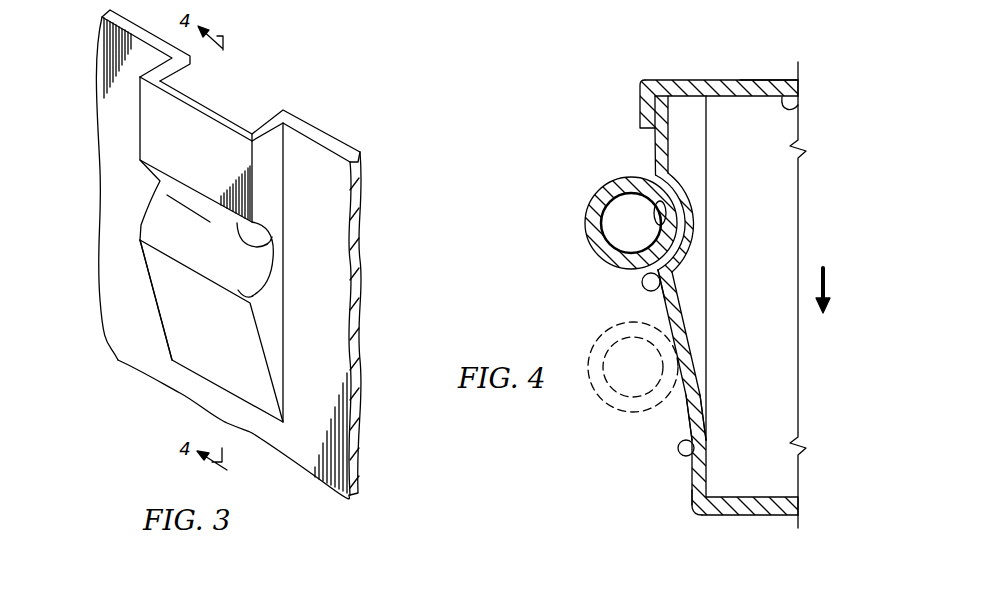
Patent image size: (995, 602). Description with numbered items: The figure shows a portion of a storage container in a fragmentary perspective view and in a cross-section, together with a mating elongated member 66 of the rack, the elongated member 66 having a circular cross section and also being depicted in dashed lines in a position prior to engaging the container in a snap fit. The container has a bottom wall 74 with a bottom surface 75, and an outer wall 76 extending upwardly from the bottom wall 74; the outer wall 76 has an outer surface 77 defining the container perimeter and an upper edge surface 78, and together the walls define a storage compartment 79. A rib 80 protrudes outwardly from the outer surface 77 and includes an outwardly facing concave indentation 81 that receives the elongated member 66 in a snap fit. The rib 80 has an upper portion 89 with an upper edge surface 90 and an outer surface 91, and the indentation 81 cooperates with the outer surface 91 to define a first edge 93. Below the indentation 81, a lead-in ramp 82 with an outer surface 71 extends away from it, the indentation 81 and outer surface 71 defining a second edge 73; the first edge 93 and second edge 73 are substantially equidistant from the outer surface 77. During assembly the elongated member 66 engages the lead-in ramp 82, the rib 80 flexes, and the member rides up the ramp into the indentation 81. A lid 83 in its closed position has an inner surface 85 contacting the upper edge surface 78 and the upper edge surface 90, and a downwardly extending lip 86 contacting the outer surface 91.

In FIG. 4, the elongated member 66 is at (590, 225).
In FIG. 3, the outer surface of lead-in ramp 71 is at (197, 341).
In FIG. 4, the outer surface of lead-in ramp 71 is at (683, 398).
In FIG. 3, the second edge 73 is at (255, 293).
In FIG. 4, the second edge 73 is at (672, 294).
In FIG. 4, the bottom wall 74 is at (738, 517).
In FIG. 4, the bottom surface 75 is at (763, 515).
In FIG. 3, the outer wall 76 is at (100, 287).
In FIG. 4, the outer wall 76 is at (687, 485).
In FIG. 3, the outer surface 77 is at (302, 298).
In FIG. 4, the outer surface 77 is at (697, 440).
In FIG. 3, the upper edge surface 78 is at (313, 135).
In FIG. 4, the upper edge surface 78 is at (773, 79).
In FIG. 4, the storage compartment 79 is at (752, 338).
In FIG. 3, the rib 80 is at (118, 163).
In FIG. 4, the rib 80 is at (618, 280).
In FIG. 3, the outwardly facing indentation 81 is at (167, 220).
In FIG. 4, the outwardly facing indentation 81 is at (675, 230).
In FIG. 3, the lead-in ramp 82 is at (137, 305).
In FIG. 4, the lead-in ramp 82 is at (657, 312).
In FIG. 4, the lid 83 is at (735, 60).
In FIG. 4, the inner surface of lid 85 is at (798, 107).
In FIG. 4, the downwardly extending lip 86 is at (640, 110).
In FIG. 3, the upper portion 89 is at (125, 110).
In FIG. 4, the upper portion 89 is at (635, 153).
In FIG. 3, the upper edge surface of upper portion 90 is at (220, 115).
In FIG. 4, the upper edge surface of upper portion 90 is at (672, 79).
In FIG. 3, the outer surface of upper portion 91 is at (176, 158).
In FIG. 4, the outer surface of upper portion 91 is at (652, 143).
In FIG. 3, the first edge 93 is at (273, 242).
In FIG. 4, the first edge 93 is at (650, 175).